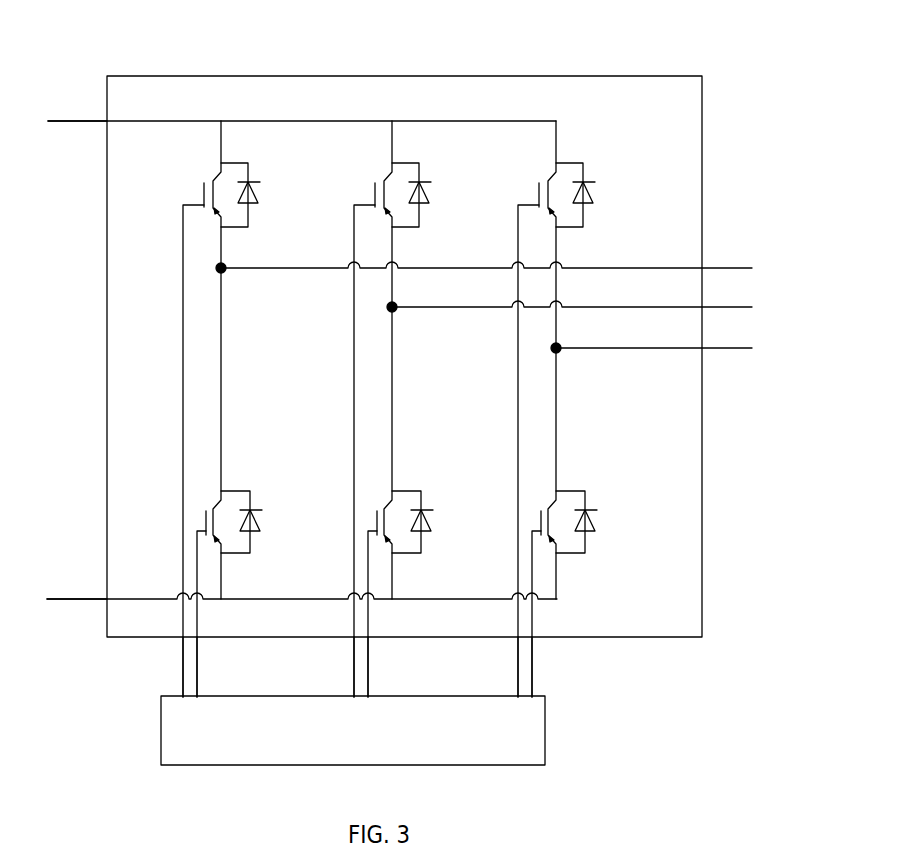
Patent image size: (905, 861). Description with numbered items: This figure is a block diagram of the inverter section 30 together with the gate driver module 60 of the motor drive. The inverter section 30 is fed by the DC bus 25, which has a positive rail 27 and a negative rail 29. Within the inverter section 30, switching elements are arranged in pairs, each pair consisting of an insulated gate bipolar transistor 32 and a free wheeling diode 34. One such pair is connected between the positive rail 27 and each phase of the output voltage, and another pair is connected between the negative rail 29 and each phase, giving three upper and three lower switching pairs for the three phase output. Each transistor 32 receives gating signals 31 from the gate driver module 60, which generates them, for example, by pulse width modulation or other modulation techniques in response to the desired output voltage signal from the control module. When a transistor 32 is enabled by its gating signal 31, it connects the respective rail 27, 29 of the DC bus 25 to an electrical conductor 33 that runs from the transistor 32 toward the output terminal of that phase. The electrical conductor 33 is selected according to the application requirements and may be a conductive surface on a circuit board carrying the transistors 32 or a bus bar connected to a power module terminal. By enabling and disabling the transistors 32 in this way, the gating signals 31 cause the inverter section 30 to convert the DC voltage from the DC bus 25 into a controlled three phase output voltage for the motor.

The DC bus 25 is at (77, 122).
The positive rail 27 is at (51, 121).
The negative rail 29 is at (50, 600).
The inverter section 30 is at (329, 76).
The gating signals 31 is at (197, 676).
The insulated gate bipolar transistor 32 is at (198, 192).
The electrical conductor 33 is at (734, 347).
The free wheeling diode 34 is at (259, 200).
The gate driver module 60 is at (546, 720).